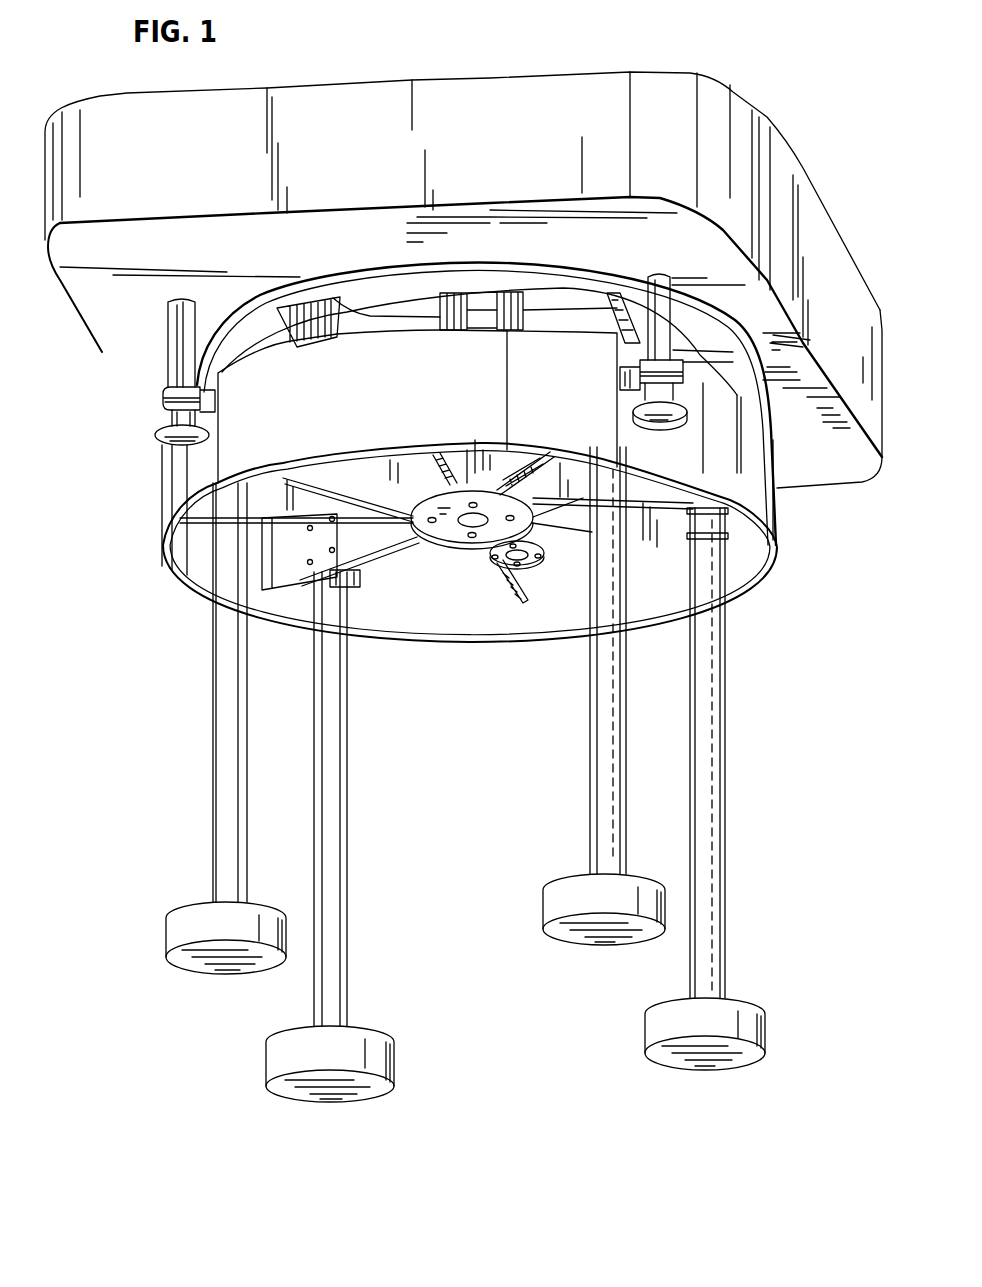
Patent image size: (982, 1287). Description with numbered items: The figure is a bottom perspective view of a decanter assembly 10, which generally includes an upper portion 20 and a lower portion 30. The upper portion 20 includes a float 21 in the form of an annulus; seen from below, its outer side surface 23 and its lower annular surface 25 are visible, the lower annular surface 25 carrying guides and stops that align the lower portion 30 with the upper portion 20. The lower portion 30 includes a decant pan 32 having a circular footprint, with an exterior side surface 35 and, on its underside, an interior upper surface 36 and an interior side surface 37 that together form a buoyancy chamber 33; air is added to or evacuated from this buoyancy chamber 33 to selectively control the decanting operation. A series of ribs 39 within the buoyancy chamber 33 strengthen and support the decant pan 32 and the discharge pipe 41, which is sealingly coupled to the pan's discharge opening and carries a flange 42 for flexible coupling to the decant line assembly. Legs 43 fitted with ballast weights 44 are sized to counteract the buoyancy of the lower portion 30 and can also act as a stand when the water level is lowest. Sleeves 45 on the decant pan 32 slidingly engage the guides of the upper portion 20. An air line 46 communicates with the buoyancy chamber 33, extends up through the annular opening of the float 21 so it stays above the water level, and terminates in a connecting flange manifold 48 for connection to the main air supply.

The decanter assembly 10 is at (846, 502).
The upper portion 20 is at (797, 138).
The float 21 is at (892, 337).
The outer side surface 23 is at (740, 107).
The lower annular surface 25 is at (105, 307).
The lower portion 30 is at (787, 519).
The decant pan 32 is at (773, 567).
The buoyancy chamber 33 is at (472, 600).
The exterior side surface 35 is at (193, 470).
The interior upper surface 36 is at (413, 550).
The interior side surface 37 is at (532, 632).
The ribs 39 is at (270, 502).
The discharge pipe 41 is at (527, 485).
The flange 42 is at (441, 538).
The legs 43 is at (213, 781).
The ballast weights 44 is at (209, 975).
The sleeves 45 is at (165, 400).
The air line 46 is at (448, 327).
The connecting flange manifold 48 is at (545, 567).